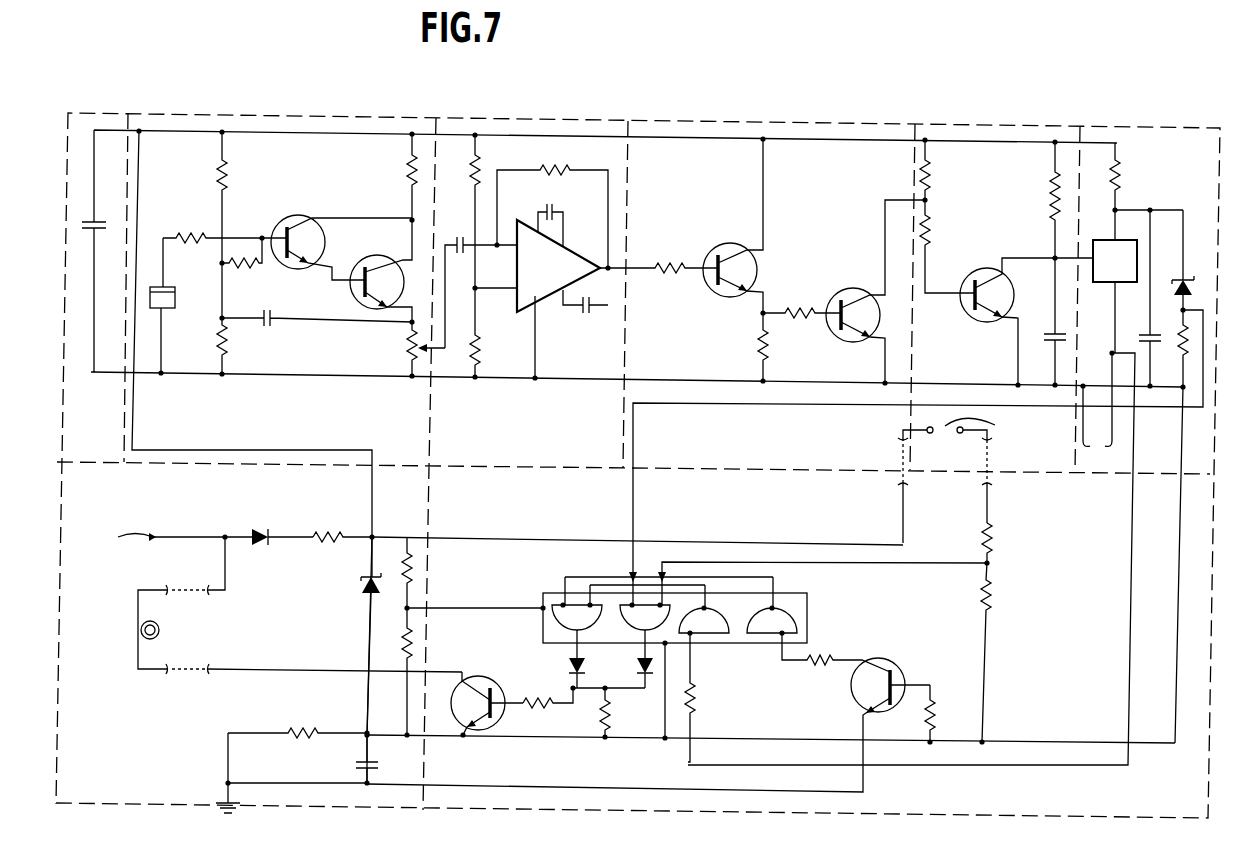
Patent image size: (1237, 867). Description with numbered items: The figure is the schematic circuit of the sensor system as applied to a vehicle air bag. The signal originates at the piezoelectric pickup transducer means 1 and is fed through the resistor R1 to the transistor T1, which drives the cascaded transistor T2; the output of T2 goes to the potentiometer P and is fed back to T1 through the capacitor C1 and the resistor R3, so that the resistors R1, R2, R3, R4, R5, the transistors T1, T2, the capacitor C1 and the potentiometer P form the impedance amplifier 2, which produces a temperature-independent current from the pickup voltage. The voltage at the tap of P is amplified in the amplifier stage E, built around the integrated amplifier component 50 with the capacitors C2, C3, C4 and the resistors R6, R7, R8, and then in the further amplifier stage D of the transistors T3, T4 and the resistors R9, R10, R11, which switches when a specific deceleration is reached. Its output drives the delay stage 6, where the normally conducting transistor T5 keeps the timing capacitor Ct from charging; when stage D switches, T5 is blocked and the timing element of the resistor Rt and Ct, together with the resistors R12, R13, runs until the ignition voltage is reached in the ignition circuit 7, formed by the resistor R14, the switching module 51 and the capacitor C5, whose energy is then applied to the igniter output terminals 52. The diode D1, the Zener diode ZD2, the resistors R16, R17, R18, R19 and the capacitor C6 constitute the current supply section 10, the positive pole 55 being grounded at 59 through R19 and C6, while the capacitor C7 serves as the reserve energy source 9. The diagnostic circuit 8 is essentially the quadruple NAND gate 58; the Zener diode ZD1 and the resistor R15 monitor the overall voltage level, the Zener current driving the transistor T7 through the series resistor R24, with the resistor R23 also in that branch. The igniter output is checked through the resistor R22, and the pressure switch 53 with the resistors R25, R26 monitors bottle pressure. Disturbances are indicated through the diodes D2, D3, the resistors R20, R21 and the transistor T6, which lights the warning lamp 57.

The piezoelectric pickup transducer means 1 is at (165, 306).
The impedance amplifier 2 is at (313, 148).
The delay stage 6 is at (992, 155).
The ignition circuit 7 is at (1199, 159).
The diagnostic circuit 8 is at (1189, 799).
The reserve energy source 9 is at (76, 128).
The current supply section 10 is at (76, 785).
The integrated amplifier component 50 is at (537, 303).
The switching module 51 is at (1123, 274).
The igniter output terminals 52 is at (1108, 448).
The pressure switch 53 is at (961, 480).
The positive pole 55 is at (160, 538).
The warning lamp 57 is at (160, 626).
The quadruple NAND gate 58 is at (807, 624).
The ground 59 is at (226, 803).
The amplifier stage E is at (510, 151).
The amplifier stage D is at (684, 153).
The potentiometer P is at (419, 349).
The resistor R1 is at (212, 226).
The resistor R2 is at (237, 197).
The resistor R3 is at (242, 268).
The resistor R4 is at (235, 346).
The resistor R5 is at (400, 177).
The resistor R6 is at (481, 211).
The resistor R7 is at (488, 332).
The resistor R8 is at (552, 202).
The resistor R9 is at (663, 283).
The resistor R10 is at (802, 298).
The resistor R11 is at (779, 347).
The resistor R12 is at (942, 170).
The resistor R13 is at (947, 246).
The resistor R14 is at (1132, 176).
The resistor R15 is at (1173, 526).
The resistor R16 is at (338, 522).
The resistor R17 is at (394, 573).
The resistor R18 is at (392, 671).
The resistor R19 is at (297, 742).
The resistor R20 is at (548, 713).
The resistor R21 is at (609, 713).
The resistor R22 is at (707, 697).
The resistor R23 is at (836, 666).
The series resistor R24 is at (947, 713).
The resistor R25 is at (1006, 543).
The resistor R26 is at (1004, 652).
The resistor Rt is at (1040, 200).
The capacitor C1 is at (317, 305).
The capacitor C2 is at (481, 277).
The capacitor C3 is at (558, 217).
The capacitor C4 is at (585, 317).
The capacitor C5 is at (1141, 298).
The capacitor C6 is at (354, 759).
The capacitor C7 is at (88, 239).
The capacitor Ct is at (1046, 321).
The transistor T1 is at (337, 234).
The transistor T2 is at (376, 271).
The transistor T3 is at (730, 226).
The transistor T4 is at (873, 291).
The transistor T5 is at (1026, 314).
The transistor T6 is at (487, 694).
The transistor T7 is at (648, 717).
The diode D1 is at (269, 524).
The diode D2 is at (567, 659).
The diode D3 is at (635, 659).
The Zener diode ZD1 is at (1200, 260).
The Zener diode ZD2 is at (354, 636).